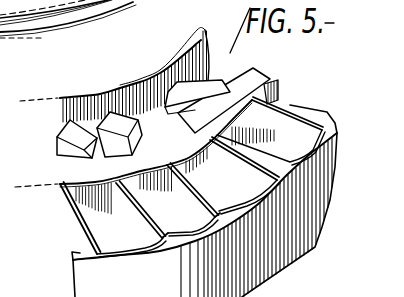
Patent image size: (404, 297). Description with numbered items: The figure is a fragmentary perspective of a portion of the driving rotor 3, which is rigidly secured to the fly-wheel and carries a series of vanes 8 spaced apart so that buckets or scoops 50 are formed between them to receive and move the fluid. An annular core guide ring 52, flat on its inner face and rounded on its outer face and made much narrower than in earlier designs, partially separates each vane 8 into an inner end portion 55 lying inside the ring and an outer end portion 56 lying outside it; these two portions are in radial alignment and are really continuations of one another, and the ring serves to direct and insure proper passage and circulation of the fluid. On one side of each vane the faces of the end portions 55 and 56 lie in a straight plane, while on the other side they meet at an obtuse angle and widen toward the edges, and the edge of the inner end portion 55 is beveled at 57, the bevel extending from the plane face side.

The driving rotor 3 is at (69, 95).
The vanes 8 is at (312, 106).
The buckets or scoops 50 is at (249, 189).
The core guide ring 52 is at (257, 78).
The inner end portion 55 is at (136, 112).
The outer end portion 56 is at (167, 226).
The bevel 57 is at (57, 143).